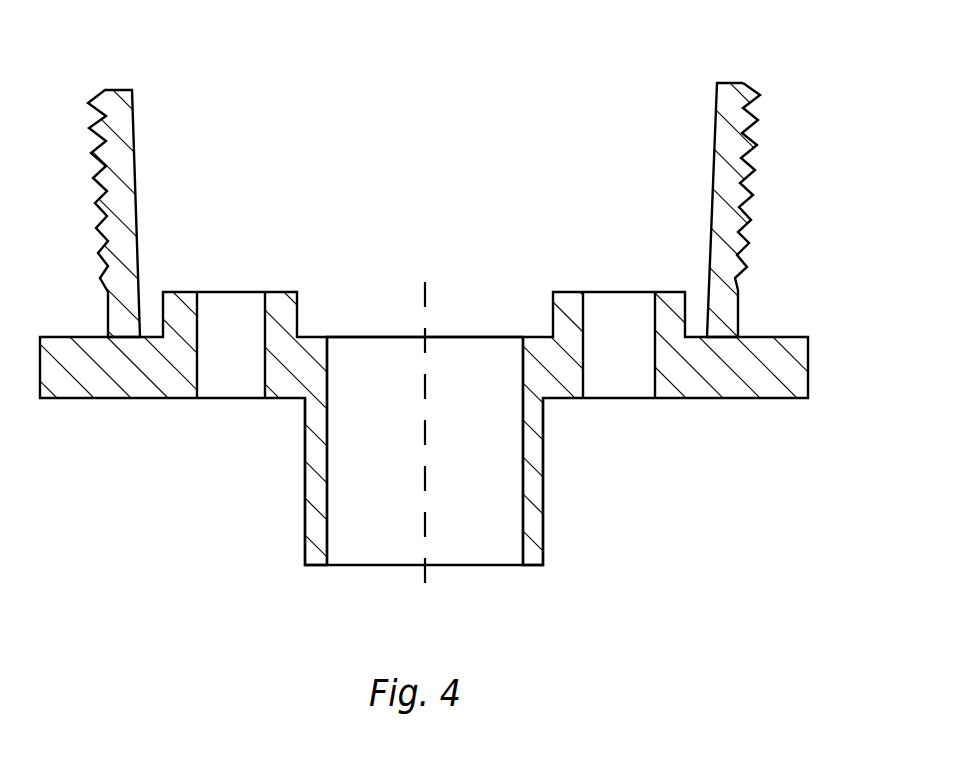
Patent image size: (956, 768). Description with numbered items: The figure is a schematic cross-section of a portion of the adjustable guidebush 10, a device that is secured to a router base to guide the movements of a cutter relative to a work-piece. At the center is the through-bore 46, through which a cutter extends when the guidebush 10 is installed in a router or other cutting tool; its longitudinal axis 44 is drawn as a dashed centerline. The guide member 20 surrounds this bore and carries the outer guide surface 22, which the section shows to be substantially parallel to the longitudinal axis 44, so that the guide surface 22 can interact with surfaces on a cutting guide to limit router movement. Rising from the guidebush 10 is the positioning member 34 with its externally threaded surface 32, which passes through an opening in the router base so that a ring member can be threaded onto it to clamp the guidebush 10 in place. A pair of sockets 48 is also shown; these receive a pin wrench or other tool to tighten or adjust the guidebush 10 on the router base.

The adjustable guidebush 10 is at (667, 474).
The guide member 20 is at (305, 550).
The outer guide surface 22 is at (543, 525).
The externally threaded surface 32 is at (750, 192).
The positioning member 34 is at (730, 82).
The longitudinal axis 44 is at (422, 297).
The through-bore 46 is at (466, 537).
The sockets 48 is at (229, 312).